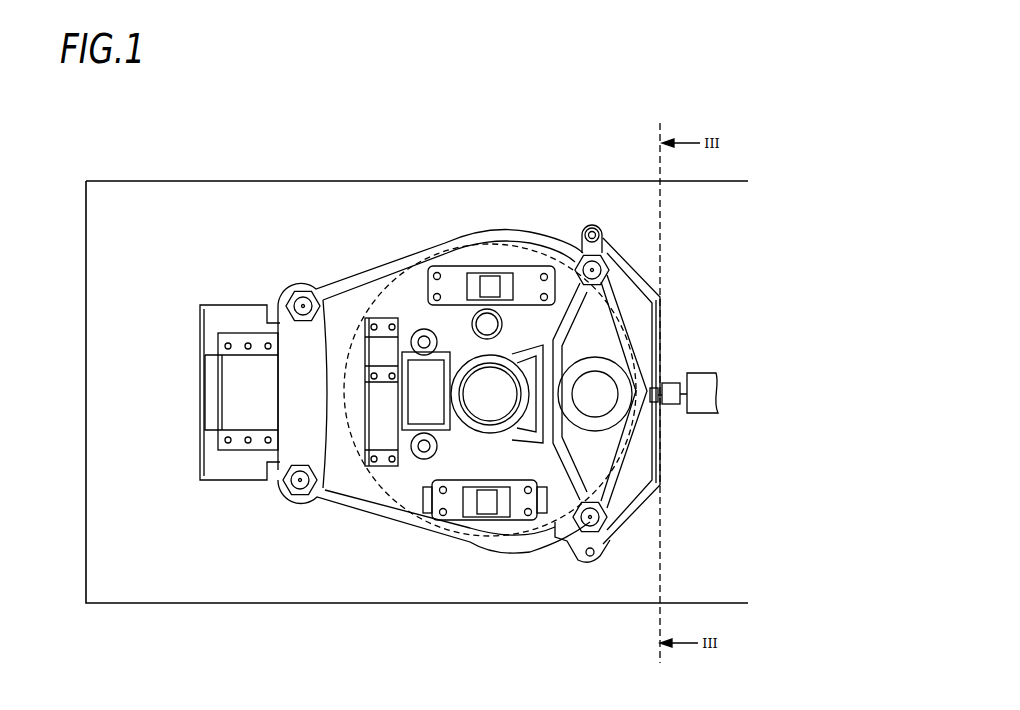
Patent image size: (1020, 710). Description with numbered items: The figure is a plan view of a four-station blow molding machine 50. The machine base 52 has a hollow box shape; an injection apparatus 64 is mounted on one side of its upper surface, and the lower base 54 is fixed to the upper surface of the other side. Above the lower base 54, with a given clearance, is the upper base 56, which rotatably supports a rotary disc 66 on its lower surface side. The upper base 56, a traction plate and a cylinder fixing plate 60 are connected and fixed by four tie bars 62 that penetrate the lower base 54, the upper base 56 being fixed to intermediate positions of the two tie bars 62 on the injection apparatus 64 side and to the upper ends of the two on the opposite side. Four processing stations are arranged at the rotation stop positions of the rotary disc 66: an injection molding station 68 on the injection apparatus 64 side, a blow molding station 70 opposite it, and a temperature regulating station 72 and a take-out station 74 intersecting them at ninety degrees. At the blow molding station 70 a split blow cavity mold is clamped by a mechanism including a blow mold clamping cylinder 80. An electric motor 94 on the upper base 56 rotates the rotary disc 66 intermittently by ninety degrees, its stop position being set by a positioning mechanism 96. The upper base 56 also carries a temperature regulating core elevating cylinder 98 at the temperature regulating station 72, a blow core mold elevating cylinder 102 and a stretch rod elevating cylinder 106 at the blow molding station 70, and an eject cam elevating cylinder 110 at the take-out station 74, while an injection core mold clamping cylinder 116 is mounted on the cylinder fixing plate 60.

The blow molding machine 50 is at (763, 160).
The machine base 52 is at (265, 192).
The lower base 54 is at (650, 478).
The upper base 56 is at (350, 268).
The cylinder fixing plate 60 is at (604, 345).
The tie bars 62 is at (297, 293).
The injection apparatus 64 is at (702, 378).
The rotary disc 66 is at (370, 298).
The injection molding station 68 is at (660, 301).
The blow molding station 70 is at (257, 308).
The temperature regulating station 72 is at (465, 206).
The take-out station 74 is at (455, 574).
The blow mold clamping cylinder 80 is at (238, 403).
The electric motor 94 is at (487, 403).
The positioning mechanism 96 is at (500, 320).
The temperature regulating core elevating cylinder 98 is at (488, 283).
The blow core mold elevating cylinder 102 is at (427, 400).
The stretch rod elevating cylinder 106 is at (380, 393).
The eject cam elevating cylinder 110 is at (492, 516).
The injection core mold clamping cylinder 116 is at (594, 393).